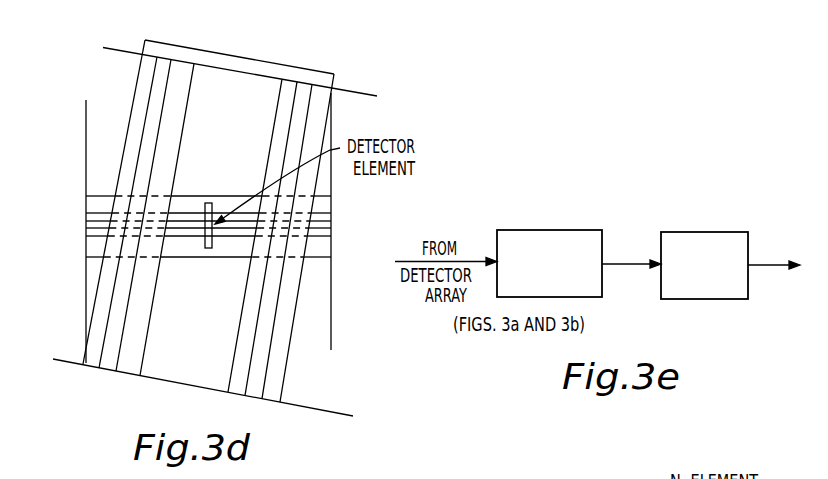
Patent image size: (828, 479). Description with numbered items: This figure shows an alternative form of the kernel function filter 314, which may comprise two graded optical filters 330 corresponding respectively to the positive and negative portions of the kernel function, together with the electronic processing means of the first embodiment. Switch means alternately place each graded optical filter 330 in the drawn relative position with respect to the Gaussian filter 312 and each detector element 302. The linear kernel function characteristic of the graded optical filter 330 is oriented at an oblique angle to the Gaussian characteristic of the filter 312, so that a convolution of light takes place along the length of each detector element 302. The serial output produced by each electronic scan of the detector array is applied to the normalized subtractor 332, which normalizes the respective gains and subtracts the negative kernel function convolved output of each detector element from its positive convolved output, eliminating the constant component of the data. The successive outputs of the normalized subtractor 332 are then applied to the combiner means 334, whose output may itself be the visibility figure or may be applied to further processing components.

In FIG. 3D, the detector element 302 is at (331, 251).
In FIG. 3D, the Gaussian filter 312 is at (92, 205).
In FIG. 3D, the kernel function filter 314 is at (257, 47).
In FIG. 3D, the graded optical filter 330 is at (263, 133).
In FIG. 3E, the normalized subtractor 332 is at (556, 230).
In FIG. 3E, the combiner means 334 is at (699, 232).